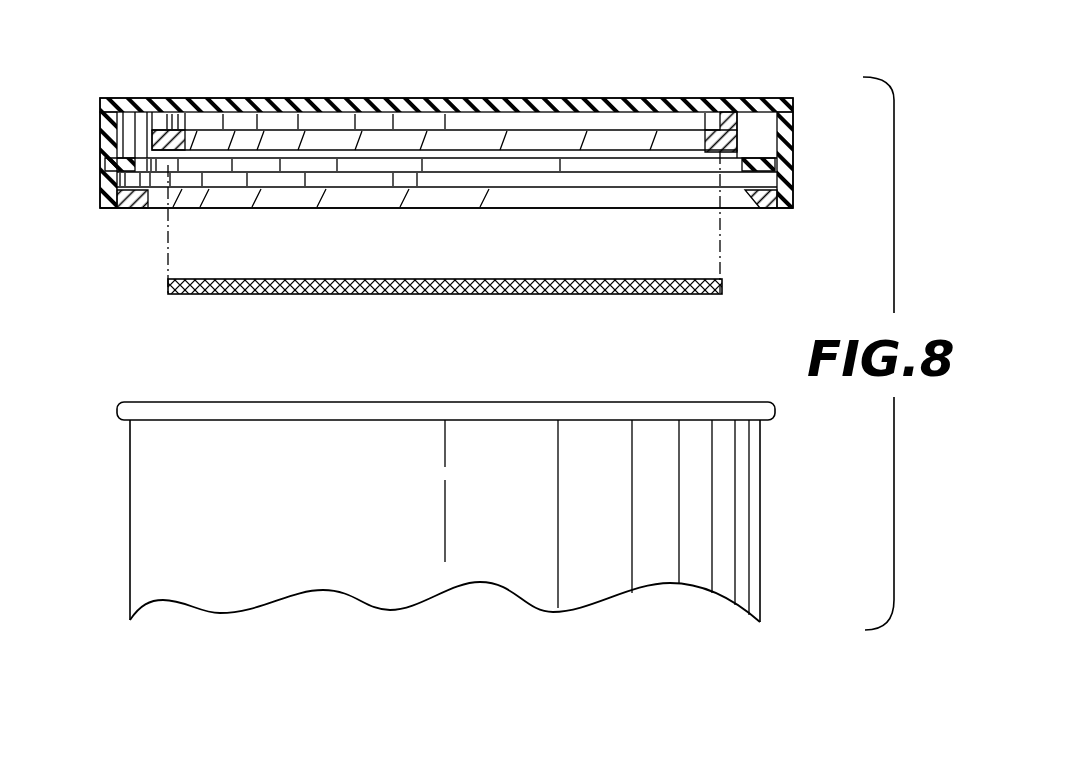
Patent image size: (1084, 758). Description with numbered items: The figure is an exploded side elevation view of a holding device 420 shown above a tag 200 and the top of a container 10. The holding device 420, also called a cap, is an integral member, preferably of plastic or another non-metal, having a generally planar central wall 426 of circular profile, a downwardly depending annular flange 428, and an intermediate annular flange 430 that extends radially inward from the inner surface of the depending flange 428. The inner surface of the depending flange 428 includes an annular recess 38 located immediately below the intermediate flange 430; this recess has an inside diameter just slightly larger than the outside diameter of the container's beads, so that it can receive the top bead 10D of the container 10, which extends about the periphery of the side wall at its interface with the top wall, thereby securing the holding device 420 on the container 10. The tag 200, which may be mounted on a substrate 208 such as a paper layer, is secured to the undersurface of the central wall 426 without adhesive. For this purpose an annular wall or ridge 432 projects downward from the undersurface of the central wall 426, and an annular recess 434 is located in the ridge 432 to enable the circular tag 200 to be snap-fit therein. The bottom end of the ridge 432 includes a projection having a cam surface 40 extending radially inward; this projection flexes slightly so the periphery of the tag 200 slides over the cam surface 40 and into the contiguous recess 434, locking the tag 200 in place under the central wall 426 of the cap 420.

The container 10 is at (435, 512).
The top bead 10D is at (207, 408).
The annular recess 38 is at (225, 180).
The cam surface 40 is at (132, 207).
The tag 200 is at (445, 290).
The substrate 208 is at (460, 280).
The holding device 420 is at (612, 88).
The central wall 426 is at (298, 104).
The downwardly depending annular flange 428 is at (100, 140).
The intermediate annular flange 430 is at (767, 162).
The annular ridge 432 is at (150, 129).
The annular recess 434 is at (383, 127).